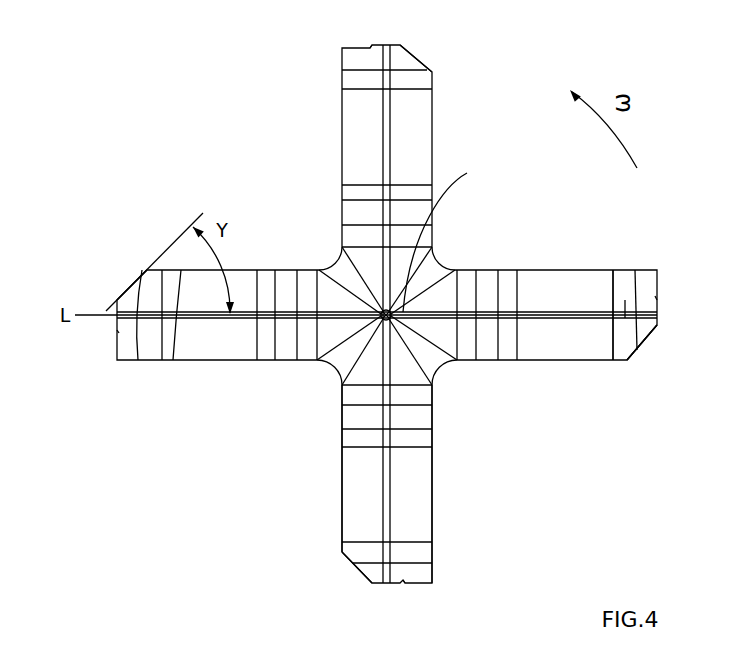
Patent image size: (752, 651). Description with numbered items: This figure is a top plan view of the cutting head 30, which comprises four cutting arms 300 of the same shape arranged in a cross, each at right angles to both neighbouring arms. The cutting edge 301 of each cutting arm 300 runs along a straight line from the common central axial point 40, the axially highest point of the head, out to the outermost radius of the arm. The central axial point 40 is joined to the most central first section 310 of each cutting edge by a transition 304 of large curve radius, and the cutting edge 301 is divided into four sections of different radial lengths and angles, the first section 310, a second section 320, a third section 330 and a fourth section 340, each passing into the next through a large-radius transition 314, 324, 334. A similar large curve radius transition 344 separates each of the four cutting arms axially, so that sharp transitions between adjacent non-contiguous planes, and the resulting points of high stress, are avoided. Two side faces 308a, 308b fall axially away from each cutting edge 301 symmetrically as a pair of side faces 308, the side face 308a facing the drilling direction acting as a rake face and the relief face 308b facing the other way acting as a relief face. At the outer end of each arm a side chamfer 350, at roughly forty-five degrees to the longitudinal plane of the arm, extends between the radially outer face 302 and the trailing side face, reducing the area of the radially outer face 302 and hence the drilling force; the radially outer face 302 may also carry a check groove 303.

The cutting head 30 is at (258, 136).
The central axial point 40 is at (452, 234).
The cutting arm 300 is at (362, 122).
The cutting edge 301 is at (390, 110).
The radially outer face 302 is at (397, 45).
The check groove 303 is at (372, 47).
The transition 304 is at (465, 313).
The side faces 308 is at (185, 362).
The side face 308a is at (433, 492).
The relief face 308b is at (342, 470).
The first section 310 is at (436, 318).
The transition 314 is at (502, 315).
The second section 320 is at (488, 317).
The transition 324 is at (512, 315).
The third section 330 is at (582, 318).
The transition 334 is at (624, 317).
The fourth section 340 is at (646, 320).
The transition 344 is at (338, 252).
The side chamfer 350 is at (414, 56).